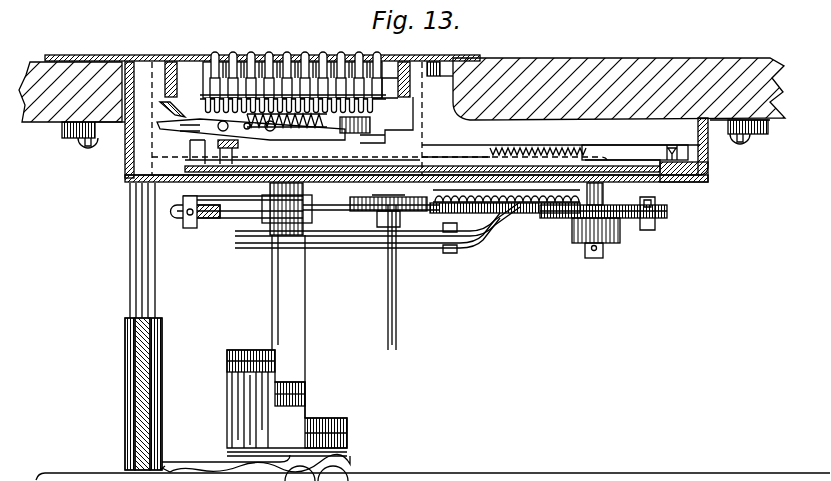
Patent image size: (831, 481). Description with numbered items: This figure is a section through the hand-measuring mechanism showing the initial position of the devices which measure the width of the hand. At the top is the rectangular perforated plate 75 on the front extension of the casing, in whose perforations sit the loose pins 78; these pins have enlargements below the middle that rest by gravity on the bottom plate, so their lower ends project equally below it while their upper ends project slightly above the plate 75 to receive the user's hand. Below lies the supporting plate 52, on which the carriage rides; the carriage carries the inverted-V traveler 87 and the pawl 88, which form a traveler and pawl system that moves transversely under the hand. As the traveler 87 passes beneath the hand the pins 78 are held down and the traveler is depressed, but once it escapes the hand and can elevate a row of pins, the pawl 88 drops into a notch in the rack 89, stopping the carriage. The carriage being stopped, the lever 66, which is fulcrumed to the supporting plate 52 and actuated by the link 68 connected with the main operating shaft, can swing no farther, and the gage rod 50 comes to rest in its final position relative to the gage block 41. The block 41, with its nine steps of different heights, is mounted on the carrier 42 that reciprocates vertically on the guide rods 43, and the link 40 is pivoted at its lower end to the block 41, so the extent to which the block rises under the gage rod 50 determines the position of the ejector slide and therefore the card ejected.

The rectangular plate 75 is at (190, 56).
The loose pins 78 is at (306, 57).
The traveler 87 is at (125, 152).
The pawl 88 is at (183, 123).
The rack 89 is at (548, 148).
The supporting plate 52 is at (170, 186).
The guide rods 43 is at (156, 276).
The carrier 42 is at (162, 356).
The link 40 is at (305, 321).
The block 41 is at (287, 403).
The gage rod 50 is at (397, 290).
The lever 66 is at (540, 218).
The link 68 is at (655, 222).